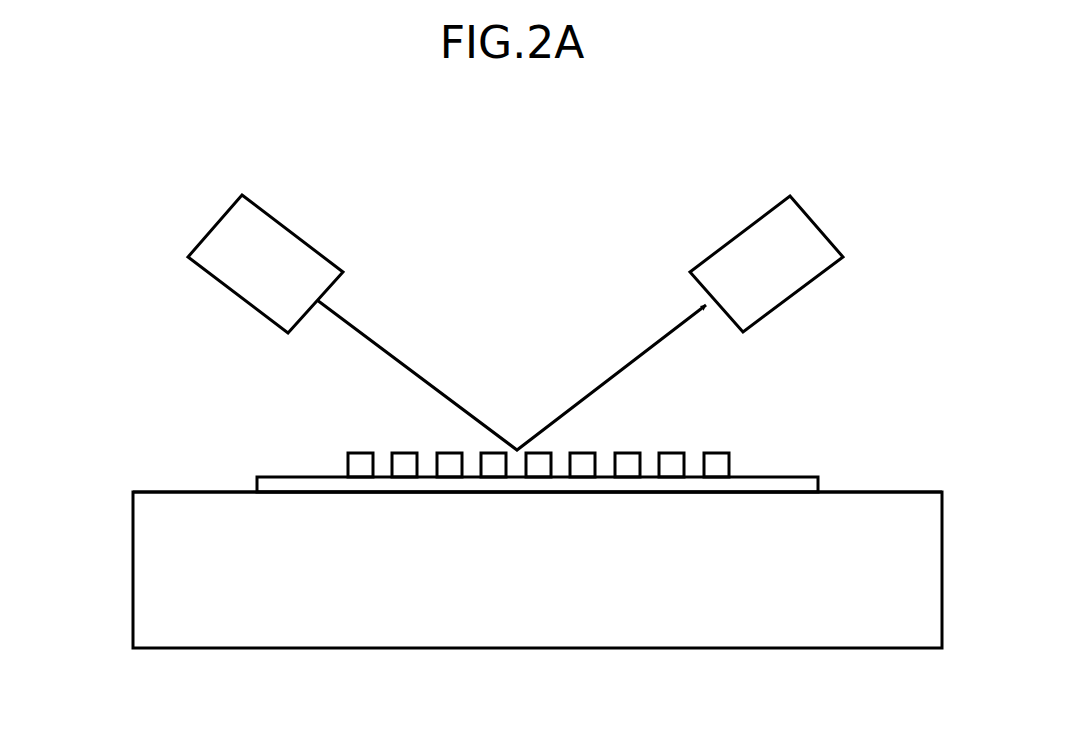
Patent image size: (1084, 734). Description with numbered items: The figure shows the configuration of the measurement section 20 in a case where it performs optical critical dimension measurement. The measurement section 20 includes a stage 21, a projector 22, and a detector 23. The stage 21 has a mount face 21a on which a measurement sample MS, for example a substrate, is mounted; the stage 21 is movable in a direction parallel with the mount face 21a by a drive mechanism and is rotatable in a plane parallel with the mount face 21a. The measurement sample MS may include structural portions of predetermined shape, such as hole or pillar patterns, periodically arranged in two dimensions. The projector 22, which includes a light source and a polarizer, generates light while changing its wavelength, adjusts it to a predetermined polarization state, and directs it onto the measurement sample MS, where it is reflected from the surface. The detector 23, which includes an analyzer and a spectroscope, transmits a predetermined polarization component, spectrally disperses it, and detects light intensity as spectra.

The measurement section 20 is at (822, 170).
The stage 21 is at (133, 572).
The mount face 21a is at (168, 486).
The projector 22 is at (292, 232).
The detector 23 is at (737, 233).
The measurement sample MS is at (836, 481).